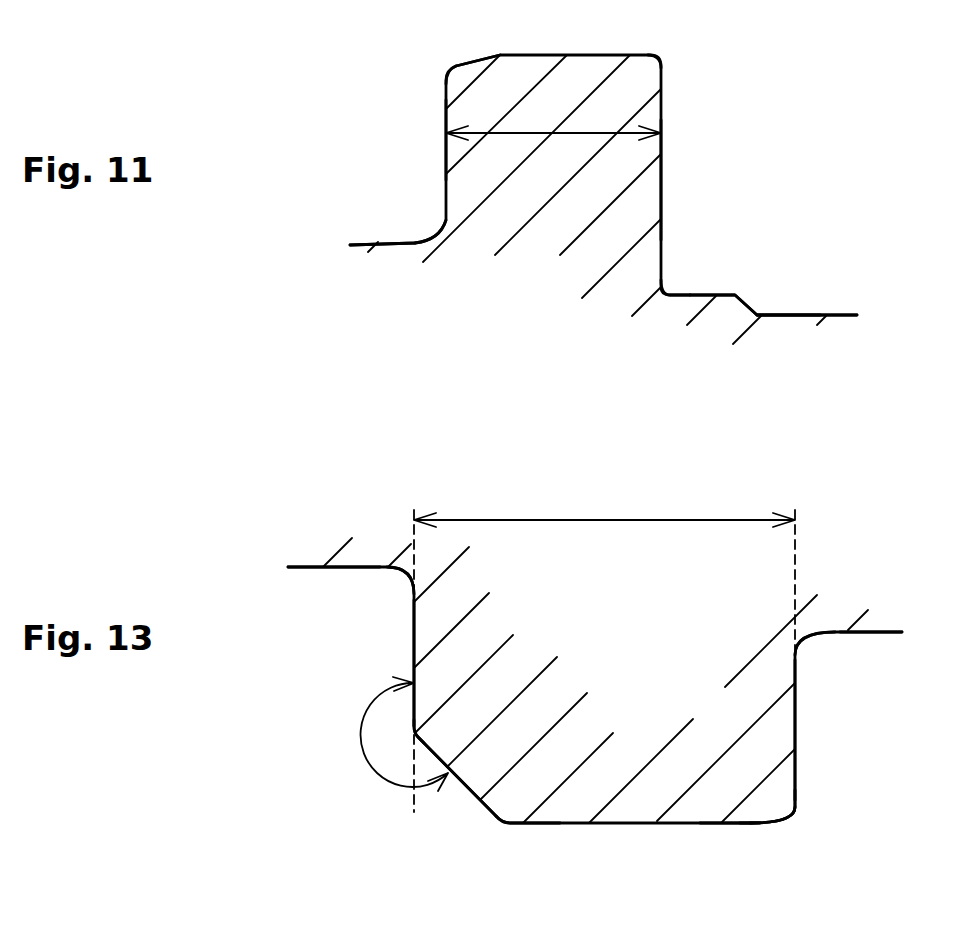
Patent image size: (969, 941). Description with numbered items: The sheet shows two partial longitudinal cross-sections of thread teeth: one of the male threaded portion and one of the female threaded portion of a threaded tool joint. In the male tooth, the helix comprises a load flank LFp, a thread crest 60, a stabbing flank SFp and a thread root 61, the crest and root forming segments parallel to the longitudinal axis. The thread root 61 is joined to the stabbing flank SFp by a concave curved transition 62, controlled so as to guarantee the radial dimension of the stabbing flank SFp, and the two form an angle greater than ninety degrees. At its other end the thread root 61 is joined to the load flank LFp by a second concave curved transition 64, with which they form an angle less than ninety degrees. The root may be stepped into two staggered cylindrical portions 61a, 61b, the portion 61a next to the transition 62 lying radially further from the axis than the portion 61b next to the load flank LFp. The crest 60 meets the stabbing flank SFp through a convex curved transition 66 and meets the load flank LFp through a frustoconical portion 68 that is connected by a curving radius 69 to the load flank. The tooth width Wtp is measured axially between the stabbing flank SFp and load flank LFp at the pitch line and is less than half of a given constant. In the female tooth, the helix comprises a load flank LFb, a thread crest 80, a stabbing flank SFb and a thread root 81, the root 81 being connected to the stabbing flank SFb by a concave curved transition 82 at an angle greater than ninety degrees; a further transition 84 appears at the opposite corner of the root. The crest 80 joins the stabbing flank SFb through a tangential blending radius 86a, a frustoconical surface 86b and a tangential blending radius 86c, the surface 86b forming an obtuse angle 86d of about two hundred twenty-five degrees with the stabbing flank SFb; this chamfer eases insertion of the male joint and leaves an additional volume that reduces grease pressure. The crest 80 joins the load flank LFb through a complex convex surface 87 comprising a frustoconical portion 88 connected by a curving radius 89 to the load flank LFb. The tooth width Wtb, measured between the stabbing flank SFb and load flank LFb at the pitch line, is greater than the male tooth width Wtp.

In FIG. 11, the thread crest 60 is at (540, 55).
In FIG. 11, the thread root 61 is at (370, 242).
In FIG. 11, the cylindrical portion 61a is at (712, 293).
In FIG. 11, the cylindrical portion 61b is at (800, 315).
In FIG. 11, the concave curved transition 62 is at (672, 288).
In FIG. 11, the second concave curved transition 64 is at (425, 233).
In FIG. 11, the convex curved transition 66 is at (657, 54).
In FIG. 11, the frustoconical portion 68 is at (477, 57).
In FIG. 11, the curving radius 69 is at (447, 77).
In FIG. 11, the tooth width of the male threaded portion Wtp is at (533, 133).
In FIG. 11, the load flank LFp is at (445, 153).
In FIG. 11, the stabbing flank SFp is at (663, 177).
In FIG. 13, the thread crest 80 is at (677, 823).
In FIG. 13, the thread root 81 is at (338, 568).
In FIG. 13, the concave curved transition 82 is at (400, 577).
In FIG. 13, the corner 84 is at (817, 637).
In FIG. 13, the tangential blending radius 86a is at (413, 733).
In FIG. 13, the frustoconical surface 86b is at (460, 788).
In FIG. 13, the tangential blending radius 86c is at (500, 823).
In FIG. 13, the obtuse angle 86d is at (362, 727).
In FIG. 13, the complex convex surface 87 is at (882, 847).
In FIG. 13, the frustoconical portion 88 is at (763, 823).
In FIG. 13, the curving radius 89 is at (797, 808).
In FIG. 13, the tooth width of the female threaded portion Wtb is at (604, 510).
In FIG. 13, the stabbing flank SFb is at (412, 635).
In FIG. 13, the load flank LFb is at (795, 698).